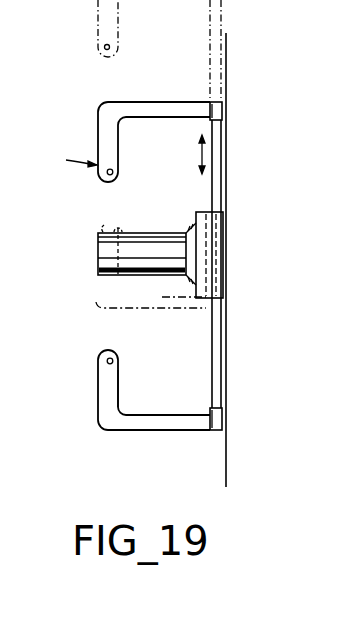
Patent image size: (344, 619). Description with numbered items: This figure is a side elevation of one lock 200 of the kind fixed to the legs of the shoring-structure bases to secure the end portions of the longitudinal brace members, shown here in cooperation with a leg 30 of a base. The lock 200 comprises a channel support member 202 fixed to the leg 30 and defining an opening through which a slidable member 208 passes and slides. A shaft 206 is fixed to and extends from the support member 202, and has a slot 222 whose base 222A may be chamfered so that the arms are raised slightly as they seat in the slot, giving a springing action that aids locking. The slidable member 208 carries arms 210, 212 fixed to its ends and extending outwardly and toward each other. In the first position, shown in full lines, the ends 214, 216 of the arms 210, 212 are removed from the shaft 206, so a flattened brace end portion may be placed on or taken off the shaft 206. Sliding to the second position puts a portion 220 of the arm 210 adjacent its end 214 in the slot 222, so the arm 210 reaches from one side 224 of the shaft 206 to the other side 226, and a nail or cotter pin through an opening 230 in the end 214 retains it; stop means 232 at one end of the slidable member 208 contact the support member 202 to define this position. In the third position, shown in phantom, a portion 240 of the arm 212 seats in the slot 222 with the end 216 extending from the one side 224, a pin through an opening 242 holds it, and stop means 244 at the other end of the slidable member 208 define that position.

The leg 30 is at (251, 82).
The lock 200 is at (233, 302).
The channel support member 202 is at (216, 276).
The shaft 206 is at (178, 276).
The slidable member 208 is at (209, 212).
The arm 210 is at (132, 141).
The arm 212 is at (124, 406).
The end 214 is at (106, 183).
The end 216 is at (98, 352).
The portion 220 is at (76, 155).
The slot 222 is at (107, 267).
The base 222A is at (118, 257).
The one side 224 is at (123, 241).
The other side 226 is at (112, 272).
The opening 230 is at (113, 172).
The stop means 232 is at (224, 116).
The portion 240 is at (118, 400).
The opening 242 is at (107, 364).
The stop means 244 is at (224, 420).